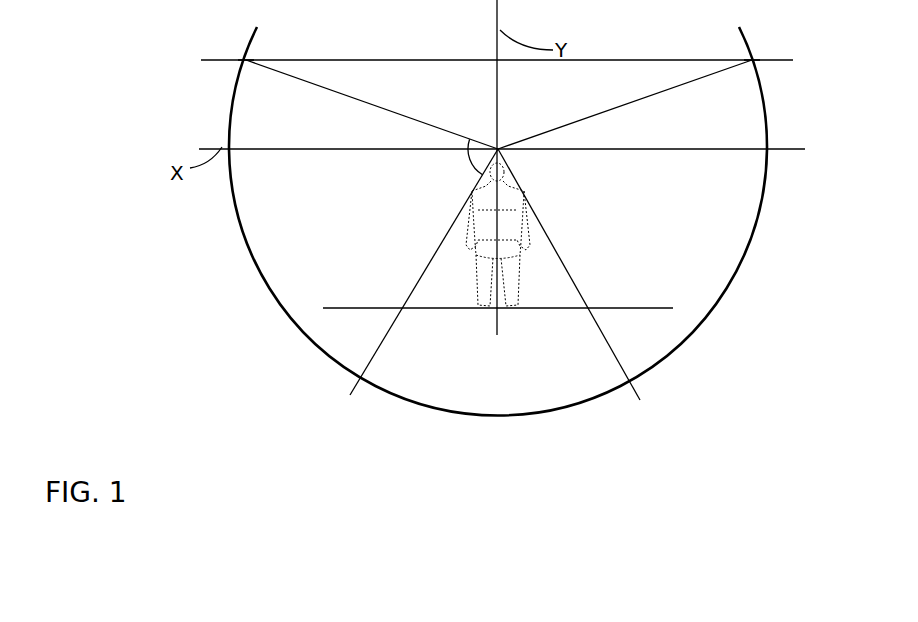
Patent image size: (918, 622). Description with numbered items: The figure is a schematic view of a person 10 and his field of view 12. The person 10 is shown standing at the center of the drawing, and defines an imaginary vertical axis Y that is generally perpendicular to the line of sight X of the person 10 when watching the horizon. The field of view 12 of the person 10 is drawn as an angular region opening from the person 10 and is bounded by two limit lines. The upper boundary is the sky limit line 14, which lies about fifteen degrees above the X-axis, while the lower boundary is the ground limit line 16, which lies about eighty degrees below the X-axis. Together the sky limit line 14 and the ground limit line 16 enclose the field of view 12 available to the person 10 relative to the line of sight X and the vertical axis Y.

The person 10 is at (517, 170).
The field of view 12 is at (472, 172).
The sky limit line 14 is at (248, 58).
The ground limit line 16 is at (348, 393).